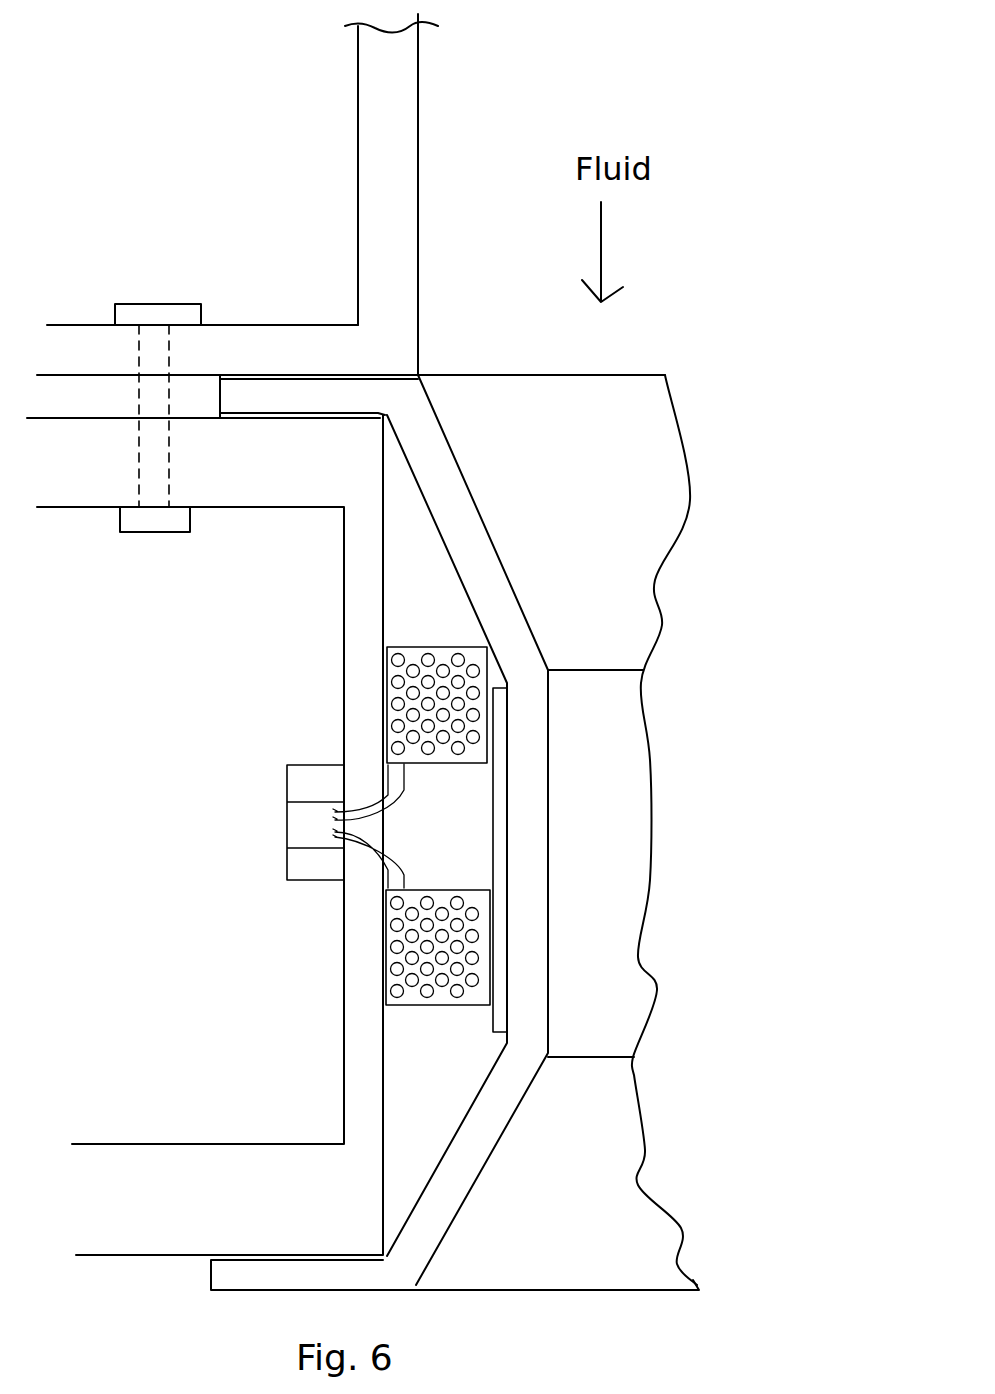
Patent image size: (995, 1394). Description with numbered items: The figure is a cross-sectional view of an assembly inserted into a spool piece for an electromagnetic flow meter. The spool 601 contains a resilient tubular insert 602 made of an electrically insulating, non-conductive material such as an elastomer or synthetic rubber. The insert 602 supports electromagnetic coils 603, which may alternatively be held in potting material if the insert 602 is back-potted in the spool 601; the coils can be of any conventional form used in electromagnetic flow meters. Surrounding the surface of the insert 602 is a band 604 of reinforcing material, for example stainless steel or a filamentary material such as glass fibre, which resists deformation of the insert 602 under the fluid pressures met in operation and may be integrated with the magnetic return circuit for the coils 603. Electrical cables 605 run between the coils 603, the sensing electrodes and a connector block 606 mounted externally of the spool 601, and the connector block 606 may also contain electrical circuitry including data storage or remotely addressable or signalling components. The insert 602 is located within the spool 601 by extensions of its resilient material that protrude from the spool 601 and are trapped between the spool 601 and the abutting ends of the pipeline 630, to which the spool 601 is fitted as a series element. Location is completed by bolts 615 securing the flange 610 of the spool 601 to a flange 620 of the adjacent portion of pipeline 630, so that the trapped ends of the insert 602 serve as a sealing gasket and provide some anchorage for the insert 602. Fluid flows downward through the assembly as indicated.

The spool 601 is at (358, 617).
The resilient tubular insert 602 is at (477, 535).
The electromagnetic coils 603 is at (395, 708).
The band of reinforcing material 604 is at (500, 978).
The electrical cables 605 is at (367, 853).
The connector block 606 is at (305, 782).
The flange 610 is at (78, 492).
The bolts 615 is at (169, 311).
The flange 620 is at (91, 339).
The pipeline 630 is at (375, 168).